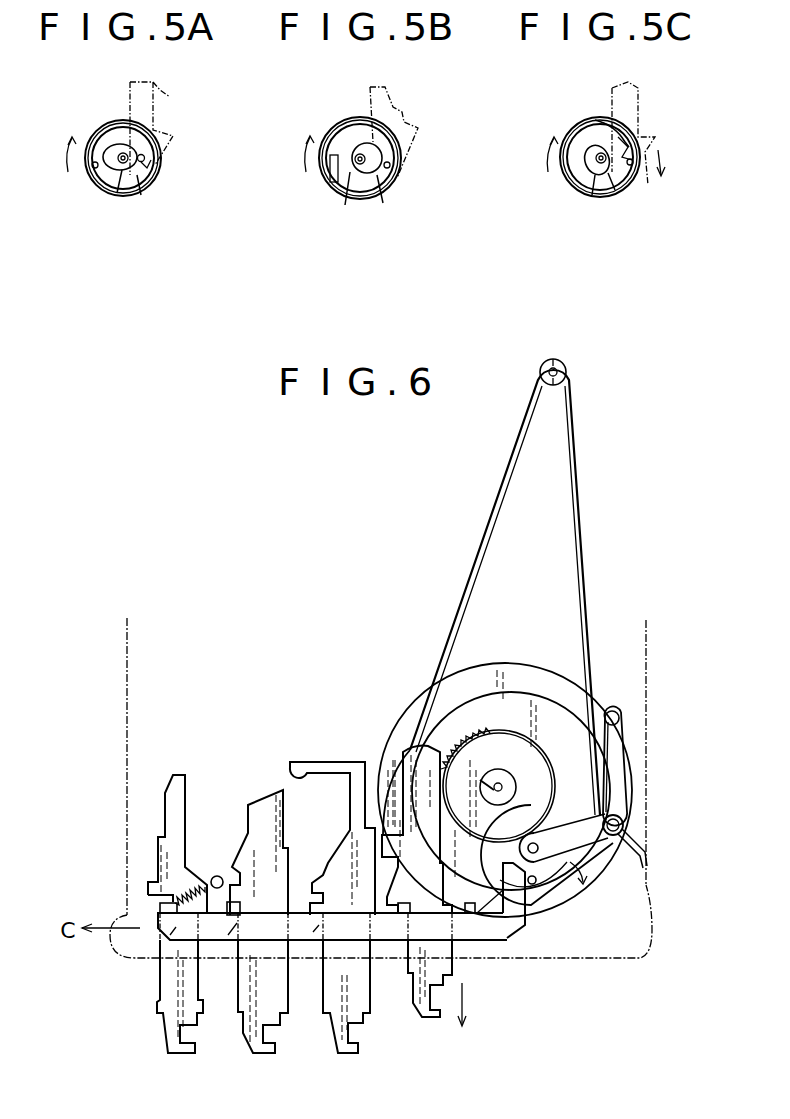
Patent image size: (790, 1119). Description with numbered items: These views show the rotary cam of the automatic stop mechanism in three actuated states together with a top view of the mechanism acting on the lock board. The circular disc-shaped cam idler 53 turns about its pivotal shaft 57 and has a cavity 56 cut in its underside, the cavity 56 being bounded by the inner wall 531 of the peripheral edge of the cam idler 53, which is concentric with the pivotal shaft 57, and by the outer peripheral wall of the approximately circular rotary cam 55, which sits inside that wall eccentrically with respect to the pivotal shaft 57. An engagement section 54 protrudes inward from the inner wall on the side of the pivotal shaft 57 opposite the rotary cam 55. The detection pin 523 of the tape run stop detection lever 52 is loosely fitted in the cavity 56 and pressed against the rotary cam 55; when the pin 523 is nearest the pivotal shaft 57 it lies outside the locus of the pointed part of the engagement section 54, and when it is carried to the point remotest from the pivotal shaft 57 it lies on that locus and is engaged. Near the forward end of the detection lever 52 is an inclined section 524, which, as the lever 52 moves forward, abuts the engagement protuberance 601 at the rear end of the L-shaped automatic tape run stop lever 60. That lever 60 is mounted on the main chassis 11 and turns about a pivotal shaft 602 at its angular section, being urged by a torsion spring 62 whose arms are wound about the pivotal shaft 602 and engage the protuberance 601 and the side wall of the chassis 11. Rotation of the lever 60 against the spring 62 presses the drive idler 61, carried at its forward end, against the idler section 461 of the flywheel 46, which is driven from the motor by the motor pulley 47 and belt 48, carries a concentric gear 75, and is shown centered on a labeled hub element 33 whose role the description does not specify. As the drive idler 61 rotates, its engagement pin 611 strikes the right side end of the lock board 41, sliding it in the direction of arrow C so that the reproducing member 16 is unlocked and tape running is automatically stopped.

In FIG. 6, the main chassis 11 is at (648, 889).
In FIG. 6, the reproducing member 16 is at (425, 1020).
In FIG. 6, the shaft 33 is at (493, 786).
In FIG. 6, the lock board 41 is at (487, 940).
In FIG. 6, the flywheel 46 is at (523, 662).
In FIG. 6, the idler section 461 is at (520, 781).
In FIG. 6, the motor pulley 47 is at (553, 386).
In FIG. 6, the belt 48 is at (592, 518).
In FIG. 5A, the tape run stop detection lever 52 is at (160, 108).
In FIG. 5B, the tape run stop detection lever 52 is at (397, 110).
In FIG. 5C, the tape run stop detection lever 52 is at (645, 106).
In FIG. 5A, the detection pin 523 is at (146, 163).
In FIG. 5B, the detection pin 523 is at (389, 168).
In FIG. 5C, the detection pin 523 is at (632, 167).
In FIG. 5C, the inclined section 524 is at (634, 172).
In FIG. 5A, the inner wall 531 is at (93, 166).
In FIG. 5A, the cam idler 53 is at (94, 189).
In FIG. 5B, the cam idler 53 is at (329, 189).
In FIG. 5C, the cam idler 53 is at (565, 176).
In FIG. 5C, the engagement section 54 is at (596, 122).
In FIG. 5A, the rotary cam 55 is at (139, 176).
In FIG. 5B, the rotary cam 55 is at (374, 176).
In FIG. 5C, the rotary cam 55 is at (602, 182).
In FIG. 5A, the cavity 56 is at (125, 124).
In FIG. 5B, the cavity 56 is at (352, 122).
In FIG. 5C, the cavity 56 is at (568, 128).
In FIG. 5A, the pivotal shaft 57 is at (122, 193).
In FIG. 5B, the pivotal shaft 57 is at (351, 180).
In FIG. 5C, the pivotal shaft 57 is at (592, 172).
In FIG. 6, the automatic tape run stop lever 60 is at (628, 775).
In FIG. 6, the engagement protuberance 601 is at (612, 711).
In FIG. 6, the pivotal shaft 602 is at (624, 826).
In FIG. 6, the drive idler 61 is at (576, 884).
In FIG. 6, the engagement pin 611 is at (537, 881).
In FIG. 6, the torsion spring 62 is at (646, 857).
In FIG. 6, the concentric gear 75 is at (503, 738).